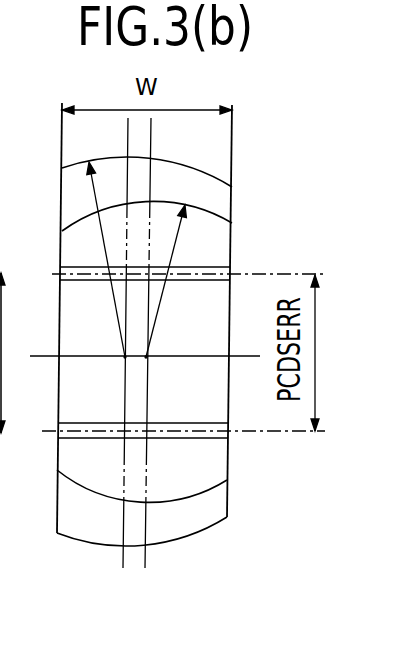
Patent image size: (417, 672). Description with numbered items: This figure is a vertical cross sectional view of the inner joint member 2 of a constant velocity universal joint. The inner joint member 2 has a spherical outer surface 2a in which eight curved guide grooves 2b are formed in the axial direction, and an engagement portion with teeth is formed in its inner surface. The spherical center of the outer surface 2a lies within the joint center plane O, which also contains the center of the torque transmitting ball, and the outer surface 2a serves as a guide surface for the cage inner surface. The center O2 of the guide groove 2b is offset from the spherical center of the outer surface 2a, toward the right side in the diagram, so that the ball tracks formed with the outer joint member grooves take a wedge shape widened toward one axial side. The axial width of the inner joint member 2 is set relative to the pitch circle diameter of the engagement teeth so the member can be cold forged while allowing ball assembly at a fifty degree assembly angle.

The inner joint member 2 is at (45, 160).
The spherical outer surface 2a is at (192, 170).
The curved guide groove 2b is at (200, 214).
The joint center plane O is at (124, 358).
The center of the guide groove of the inner joint member O2 is at (147, 358).